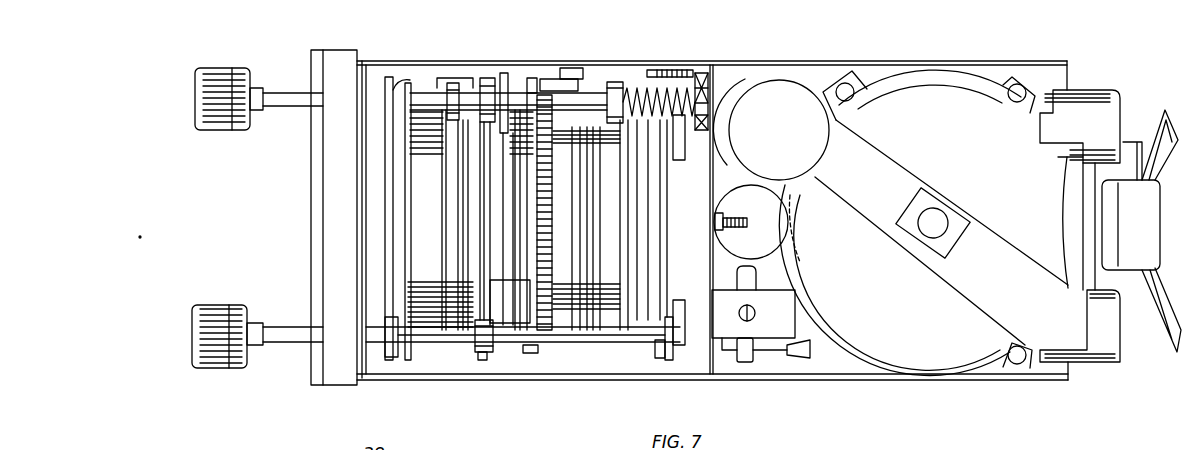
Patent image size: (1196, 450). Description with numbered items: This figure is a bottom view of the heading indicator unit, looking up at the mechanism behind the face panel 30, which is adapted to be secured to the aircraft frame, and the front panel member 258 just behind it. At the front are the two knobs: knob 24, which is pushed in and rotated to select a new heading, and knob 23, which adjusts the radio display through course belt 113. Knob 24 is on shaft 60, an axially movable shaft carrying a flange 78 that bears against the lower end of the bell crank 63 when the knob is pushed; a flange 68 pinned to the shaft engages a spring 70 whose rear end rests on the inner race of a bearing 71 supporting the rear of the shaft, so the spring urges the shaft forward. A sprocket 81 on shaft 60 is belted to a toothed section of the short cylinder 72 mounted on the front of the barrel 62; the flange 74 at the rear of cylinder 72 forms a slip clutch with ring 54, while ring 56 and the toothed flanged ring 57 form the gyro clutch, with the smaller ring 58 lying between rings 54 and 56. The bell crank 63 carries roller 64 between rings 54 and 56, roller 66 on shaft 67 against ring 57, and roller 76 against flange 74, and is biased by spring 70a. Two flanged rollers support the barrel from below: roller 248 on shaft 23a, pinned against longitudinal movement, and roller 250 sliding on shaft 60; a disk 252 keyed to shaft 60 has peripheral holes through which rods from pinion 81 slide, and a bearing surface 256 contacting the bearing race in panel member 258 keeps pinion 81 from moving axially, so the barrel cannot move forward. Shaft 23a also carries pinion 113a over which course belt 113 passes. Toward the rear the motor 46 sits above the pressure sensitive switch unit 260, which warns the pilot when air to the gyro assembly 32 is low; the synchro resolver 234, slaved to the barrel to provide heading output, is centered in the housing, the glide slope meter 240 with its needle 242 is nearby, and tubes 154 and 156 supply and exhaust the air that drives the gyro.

The knob 23 is at (192, 338).
The shaft 23a is at (280, 327).
The knob 24 is at (195, 95).
The face panel 30 is at (311, 212).
The vertical gyro assembly 32 is at (923, 222).
The motor 46 is at (745, 80).
The ring 54 is at (480, 357).
The ring 56 is at (525, 355).
The flanged ring 57 is at (540, 350).
The ring 58 is at (500, 327).
The shaft 60 is at (283, 90).
The barrel 62 is at (603, 310).
The bell crank 63 is at (650, 88).
The roller 64 is at (532, 80).
The roller 66 is at (575, 93).
The shaft 67 is at (570, 68).
The flange 68 is at (614, 82).
The spring 70 is at (636, 78).
The spring 70a is at (677, 70).
The bearing 71 is at (702, 75).
The short cylinder 72 is at (446, 220).
The flange 74 is at (462, 322).
The roller 76 is at (450, 83).
The flange 78 is at (522, 73).
The sprocket 81 is at (418, 80).
The course belt 113 is at (670, 362).
The pinion 113a is at (663, 357).
The tube 154 is at (1110, 90).
The exhaust tube 156 is at (1112, 363).
The resolver 234 is at (786, 258).
The glide slope indicating meter 240 is at (795, 312).
The meter arm 242 is at (780, 362).
The roller 248 is at (485, 355).
The roller 250 is at (488, 80).
The disk 252 is at (465, 78).
The bearing surface 256 is at (393, 80).
The front panel member 258 is at (365, 61).
The pressure sensitive switch unit 260 is at (779, 130).